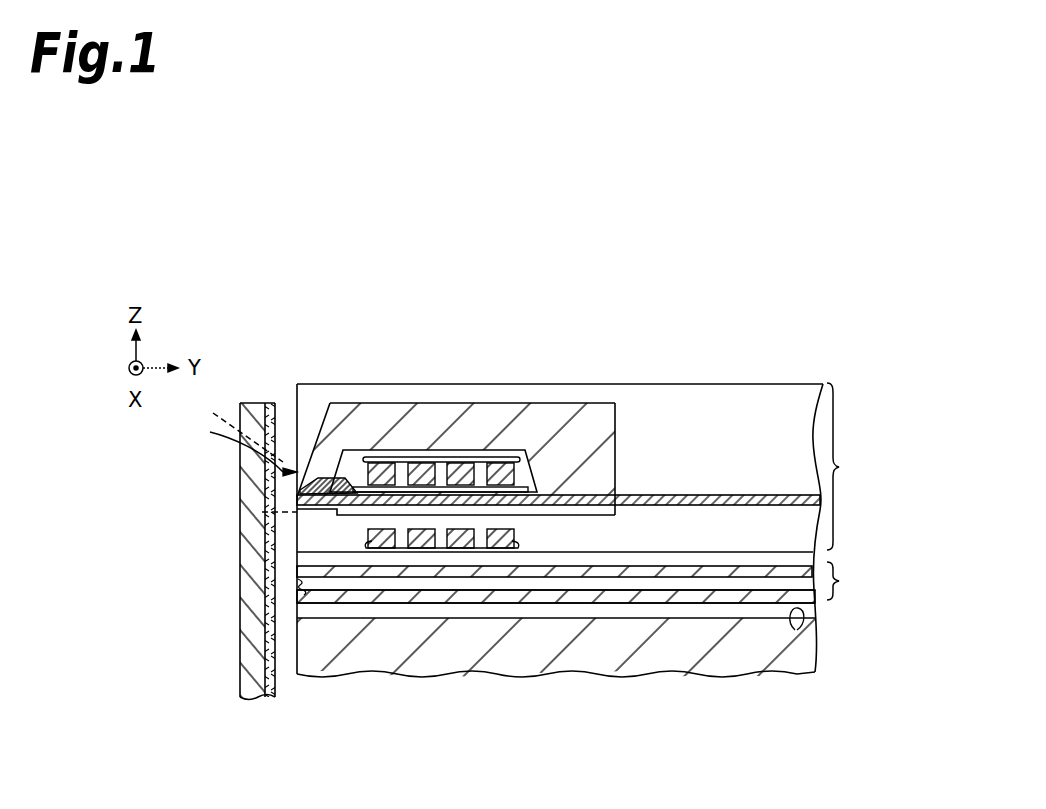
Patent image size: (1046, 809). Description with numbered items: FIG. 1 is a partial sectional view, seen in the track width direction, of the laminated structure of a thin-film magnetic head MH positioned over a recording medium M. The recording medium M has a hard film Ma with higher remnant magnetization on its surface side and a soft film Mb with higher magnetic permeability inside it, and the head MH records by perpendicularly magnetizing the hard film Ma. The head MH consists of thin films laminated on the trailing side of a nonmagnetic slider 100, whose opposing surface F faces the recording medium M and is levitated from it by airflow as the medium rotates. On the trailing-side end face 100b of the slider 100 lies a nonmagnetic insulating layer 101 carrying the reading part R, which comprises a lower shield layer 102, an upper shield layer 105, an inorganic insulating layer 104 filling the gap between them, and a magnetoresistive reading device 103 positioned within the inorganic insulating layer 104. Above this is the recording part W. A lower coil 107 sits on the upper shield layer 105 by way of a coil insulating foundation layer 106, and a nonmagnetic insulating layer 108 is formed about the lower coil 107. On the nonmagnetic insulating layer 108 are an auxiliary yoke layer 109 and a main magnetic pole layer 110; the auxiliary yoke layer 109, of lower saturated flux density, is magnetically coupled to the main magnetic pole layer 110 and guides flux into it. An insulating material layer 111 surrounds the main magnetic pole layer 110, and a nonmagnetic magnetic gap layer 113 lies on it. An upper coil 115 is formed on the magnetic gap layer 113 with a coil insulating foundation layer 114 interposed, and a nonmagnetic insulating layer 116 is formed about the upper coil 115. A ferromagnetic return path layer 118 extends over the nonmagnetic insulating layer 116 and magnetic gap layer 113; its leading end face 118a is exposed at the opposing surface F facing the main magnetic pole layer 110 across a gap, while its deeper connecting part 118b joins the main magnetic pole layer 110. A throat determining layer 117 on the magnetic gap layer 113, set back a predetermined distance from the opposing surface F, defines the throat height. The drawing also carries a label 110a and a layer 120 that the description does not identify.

The thin-film magnetic head MH is at (808, 277).
The slider 100 is at (299, 640).
The trailing-side end face 100b is at (797, 630).
The nonmagnetic insulating layer 101 is at (299, 612).
The lower shield layer 102 is at (297, 597).
The reading device 103 is at (297, 583).
The inorganic insulating layer 104 is at (719, 580).
The upper shield layer 105 is at (297, 569).
The coil insulating foundation layer 106 is at (386, 558).
The lower coil 107 is at (443, 550).
The nonmagnetic insulating layer 108 is at (768, 542).
The auxiliary yoke layer 109 is at (298, 529).
The main magnetic pole layer 110 is at (337, 512).
The surface layer of plate 110a is at (297, 495).
The insulating material layer 111 is at (790, 495).
The magnetic gap layer 113 is at (283, 472).
The coil insulating foundation layer 114 is at (513, 448).
The upper coil 115 is at (437, 457).
The nonmagnetic insulating layer 116 is at (372, 463).
The throat determining layer 117 is at (330, 478).
The return path layer 118 is at (465, 403).
The leading end face 118a is at (298, 440).
The connecting part 118b is at (588, 430).
The cover region 120 is at (397, 393).
The recording medium M is at (277, 700).
The hard film Ma is at (250, 684).
The soft film Mb is at (272, 668).
The recording part W is at (851, 466).
The reading part R is at (847, 581).
The opposing surface F is at (236, 447).